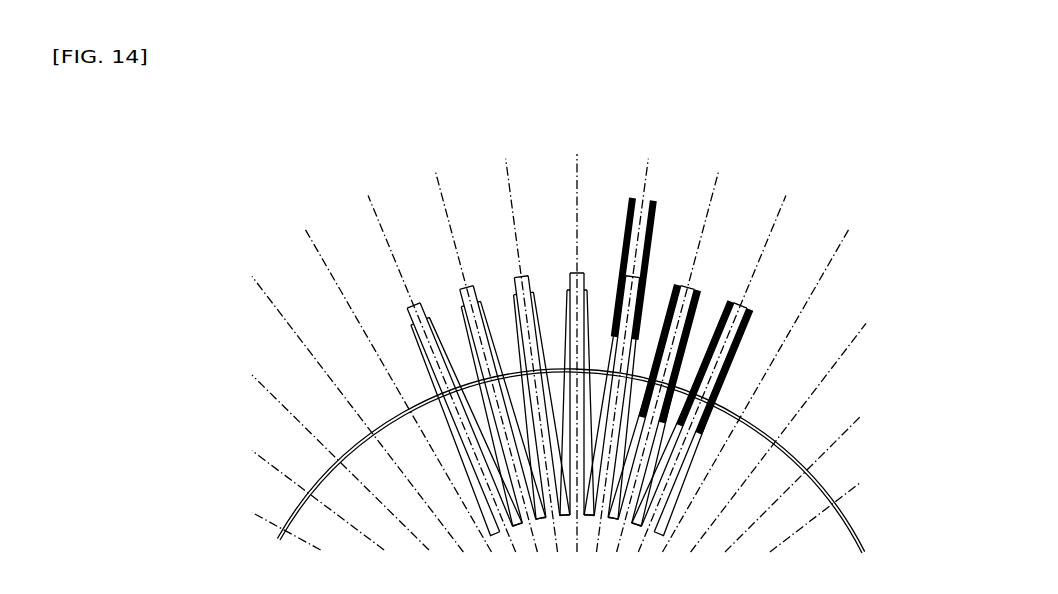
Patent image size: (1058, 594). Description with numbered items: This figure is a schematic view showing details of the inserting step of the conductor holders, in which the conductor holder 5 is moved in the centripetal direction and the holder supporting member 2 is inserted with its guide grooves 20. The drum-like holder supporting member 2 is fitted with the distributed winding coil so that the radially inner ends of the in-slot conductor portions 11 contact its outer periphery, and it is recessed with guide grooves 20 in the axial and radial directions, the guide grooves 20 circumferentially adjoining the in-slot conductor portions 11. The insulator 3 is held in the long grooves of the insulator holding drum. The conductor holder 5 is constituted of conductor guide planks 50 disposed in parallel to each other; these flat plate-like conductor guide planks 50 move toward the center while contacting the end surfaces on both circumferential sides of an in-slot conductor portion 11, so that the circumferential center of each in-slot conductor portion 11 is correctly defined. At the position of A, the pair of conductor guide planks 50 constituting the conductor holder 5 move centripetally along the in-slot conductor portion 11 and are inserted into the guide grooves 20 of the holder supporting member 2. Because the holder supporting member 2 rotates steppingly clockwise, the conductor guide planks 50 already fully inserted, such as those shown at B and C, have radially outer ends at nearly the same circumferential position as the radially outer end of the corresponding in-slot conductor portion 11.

The holder supporting member 2 is at (805, 505).
The insulator 3 is at (517, 356).
The conductor holder 5 is at (788, 417).
The in-slot conductor portion 11 is at (410, 318).
The guide groove 20 is at (467, 423).
The conductor guide plank 50 is at (628, 238).
The position A is at (637, 351).
The conductor pair B is at (700, 289).
The conductor pair C is at (754, 309).